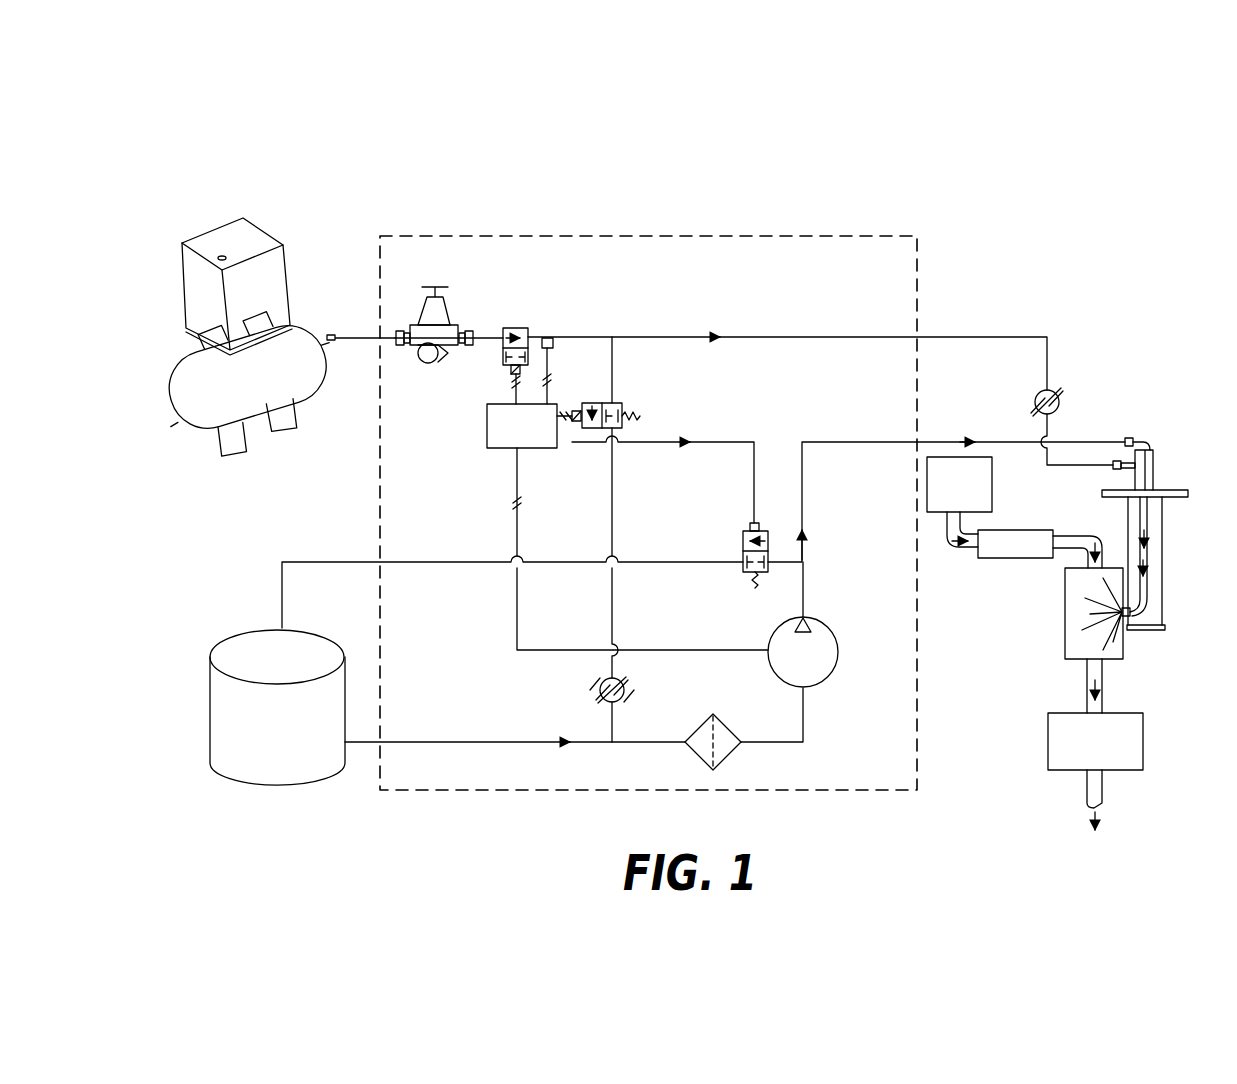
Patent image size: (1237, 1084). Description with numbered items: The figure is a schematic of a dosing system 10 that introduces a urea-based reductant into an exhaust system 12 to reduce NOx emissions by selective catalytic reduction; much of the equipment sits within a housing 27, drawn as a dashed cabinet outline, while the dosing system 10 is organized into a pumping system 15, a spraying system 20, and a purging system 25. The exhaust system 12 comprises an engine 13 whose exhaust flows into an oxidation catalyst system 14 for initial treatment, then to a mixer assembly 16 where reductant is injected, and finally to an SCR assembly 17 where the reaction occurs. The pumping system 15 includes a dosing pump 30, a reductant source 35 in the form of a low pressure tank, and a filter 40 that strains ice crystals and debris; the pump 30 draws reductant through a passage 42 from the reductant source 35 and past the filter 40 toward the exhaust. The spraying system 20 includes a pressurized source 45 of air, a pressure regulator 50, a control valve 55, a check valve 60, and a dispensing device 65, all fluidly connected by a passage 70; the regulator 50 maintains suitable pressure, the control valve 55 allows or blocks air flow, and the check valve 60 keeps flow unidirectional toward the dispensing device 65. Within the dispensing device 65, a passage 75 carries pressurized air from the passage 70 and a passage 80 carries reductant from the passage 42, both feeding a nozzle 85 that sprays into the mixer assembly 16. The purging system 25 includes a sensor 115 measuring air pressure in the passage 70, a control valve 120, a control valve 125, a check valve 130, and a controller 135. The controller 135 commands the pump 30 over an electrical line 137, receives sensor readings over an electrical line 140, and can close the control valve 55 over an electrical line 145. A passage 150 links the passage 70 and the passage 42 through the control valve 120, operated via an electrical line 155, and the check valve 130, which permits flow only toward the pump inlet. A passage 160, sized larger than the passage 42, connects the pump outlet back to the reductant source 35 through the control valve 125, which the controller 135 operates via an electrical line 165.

The dosing system 10 is at (260, 158).
The exhaust system 12 is at (1015, 605).
The engine 13 is at (947, 496).
The oxidation catalyst system 14 is at (1002, 556).
The pumping system 15 is at (850, 708).
The mixer assembly 16 is at (1070, 657).
The SCR assembly 17 is at (1083, 754).
The spraying system 20 is at (1070, 296).
The purging system 25 is at (680, 398).
The housing 27 is at (786, 236).
The dosing pump 30 is at (830, 650).
The reductant source 35 is at (264, 727).
The filter 40 is at (697, 752).
The passage 42 is at (512, 740).
The pressurized source 45 is at (244, 390).
The pressure regulator 50 is at (443, 302).
The control valve 55 is at (518, 326).
The check valve 60 is at (1050, 395).
The dispensing device 65 is at (1198, 482).
The passage 70 is at (768, 335).
The passage 75 is at (1137, 522).
The passage 80 is at (1162, 533).
The nozzle 85 is at (1126, 625).
The sensor 115 is at (553, 344).
The control valve 120 is at (620, 400).
The control valve 125 is at (745, 545).
The check valve 130 is at (620, 686).
The controller 135 is at (505, 436).
The electrical line 137 is at (513, 508).
The electrical line 140 is at (549, 380).
The electrical line 145 is at (513, 380).
The passage 150 is at (612, 478).
The electrical line 155 is at (568, 422).
The passage 160 is at (662, 563).
The electrical line 165 is at (728, 440).